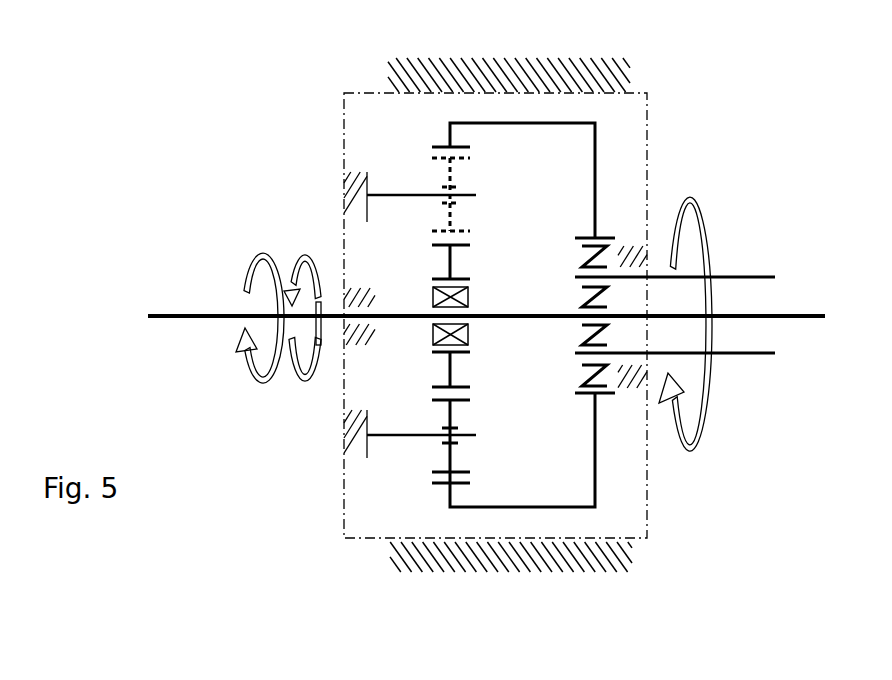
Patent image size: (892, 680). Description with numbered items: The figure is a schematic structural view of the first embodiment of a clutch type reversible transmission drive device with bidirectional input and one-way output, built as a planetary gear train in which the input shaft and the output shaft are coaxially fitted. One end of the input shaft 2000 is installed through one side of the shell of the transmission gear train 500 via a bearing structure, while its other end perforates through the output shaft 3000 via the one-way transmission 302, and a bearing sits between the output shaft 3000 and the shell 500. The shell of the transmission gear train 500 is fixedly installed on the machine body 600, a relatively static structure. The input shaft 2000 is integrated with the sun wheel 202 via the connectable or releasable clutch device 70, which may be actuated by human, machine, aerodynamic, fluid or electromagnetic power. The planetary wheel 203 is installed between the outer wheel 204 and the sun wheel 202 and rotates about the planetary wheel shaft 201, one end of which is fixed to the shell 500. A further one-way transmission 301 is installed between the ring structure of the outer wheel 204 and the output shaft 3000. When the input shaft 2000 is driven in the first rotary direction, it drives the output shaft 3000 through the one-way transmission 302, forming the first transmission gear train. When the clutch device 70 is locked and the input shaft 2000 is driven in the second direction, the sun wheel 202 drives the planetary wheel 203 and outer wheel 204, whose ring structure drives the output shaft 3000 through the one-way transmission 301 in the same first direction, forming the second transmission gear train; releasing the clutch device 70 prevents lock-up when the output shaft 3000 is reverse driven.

The shell of the transmission gear train 500 is at (340, 140).
The machine body 600 is at (519, 80).
The planetary wheel 203 is at (437, 158).
The sun wheel 202 is at (470, 246).
The planetary wheel shaft 201 is at (470, 437).
The outer wheel 204 is at (433, 483).
The connectable or releasable clutch device 70 is at (436, 295).
The one-way transmission 301 is at (583, 260).
The one-way transmission 302 is at (588, 333).
The input shaft 2000 is at (236, 316).
The output shaft 3000 is at (742, 277).